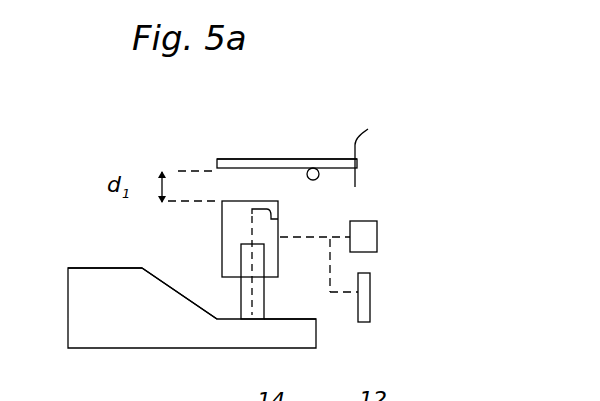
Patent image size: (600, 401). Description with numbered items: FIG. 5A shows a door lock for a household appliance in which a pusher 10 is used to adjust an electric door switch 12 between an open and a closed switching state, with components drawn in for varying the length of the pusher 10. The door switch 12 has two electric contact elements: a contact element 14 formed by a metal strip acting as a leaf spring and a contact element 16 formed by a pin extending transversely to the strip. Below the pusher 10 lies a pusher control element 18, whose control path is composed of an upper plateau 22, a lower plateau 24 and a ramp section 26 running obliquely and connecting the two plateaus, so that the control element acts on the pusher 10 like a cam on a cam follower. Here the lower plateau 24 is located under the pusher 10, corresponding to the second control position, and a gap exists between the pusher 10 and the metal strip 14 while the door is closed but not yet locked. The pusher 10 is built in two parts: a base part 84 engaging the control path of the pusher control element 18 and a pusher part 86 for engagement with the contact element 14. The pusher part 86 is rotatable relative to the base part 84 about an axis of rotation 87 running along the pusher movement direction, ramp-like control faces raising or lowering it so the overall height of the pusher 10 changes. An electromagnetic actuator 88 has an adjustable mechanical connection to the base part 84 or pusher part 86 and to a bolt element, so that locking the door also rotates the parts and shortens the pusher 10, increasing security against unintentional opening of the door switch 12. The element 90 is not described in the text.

The pusher 10 is at (222, 228).
The electric door switch 12 is at (314, 158).
The contact element 14 is at (238, 158).
The contact element 16 is at (312, 181).
The pusher control element 18 is at (175, 349).
The upper plateau 22 is at (83, 268).
The lower plateau 24 is at (289, 318).
The ramp section 26 is at (171, 286).
The base part 84 is at (241, 311).
The pusher part 86 is at (238, 201).
The axis of rotation 87 is at (278, 223).
The electromagnetic actuator 88 is at (363, 221).
The drive 90 is at (370, 316).